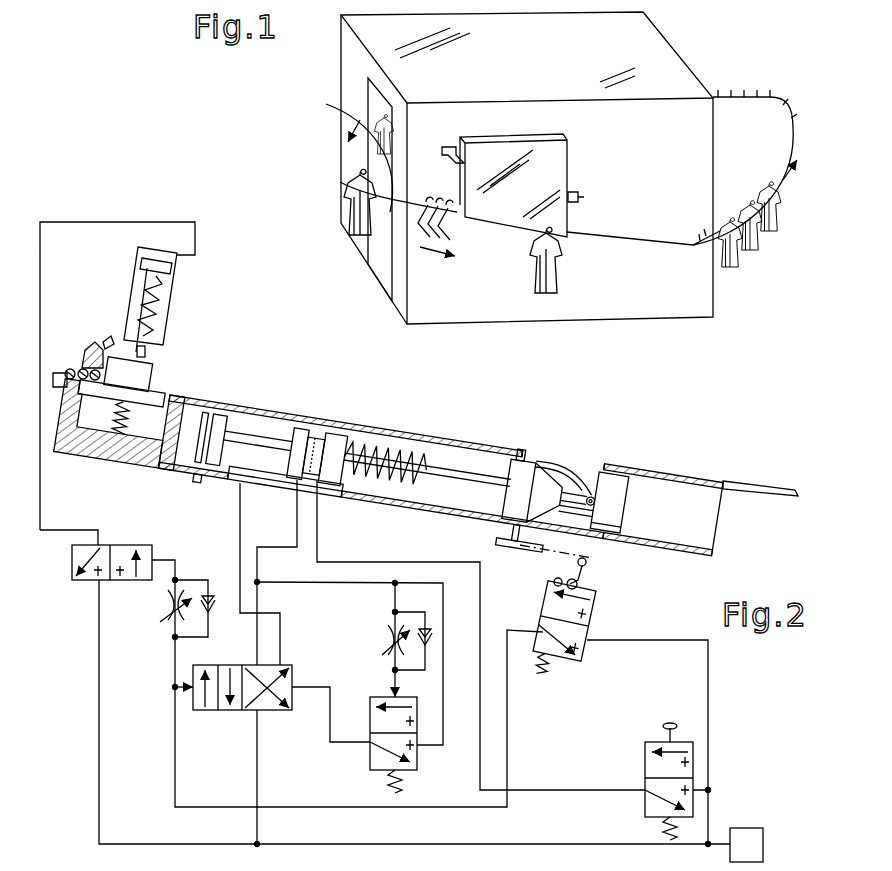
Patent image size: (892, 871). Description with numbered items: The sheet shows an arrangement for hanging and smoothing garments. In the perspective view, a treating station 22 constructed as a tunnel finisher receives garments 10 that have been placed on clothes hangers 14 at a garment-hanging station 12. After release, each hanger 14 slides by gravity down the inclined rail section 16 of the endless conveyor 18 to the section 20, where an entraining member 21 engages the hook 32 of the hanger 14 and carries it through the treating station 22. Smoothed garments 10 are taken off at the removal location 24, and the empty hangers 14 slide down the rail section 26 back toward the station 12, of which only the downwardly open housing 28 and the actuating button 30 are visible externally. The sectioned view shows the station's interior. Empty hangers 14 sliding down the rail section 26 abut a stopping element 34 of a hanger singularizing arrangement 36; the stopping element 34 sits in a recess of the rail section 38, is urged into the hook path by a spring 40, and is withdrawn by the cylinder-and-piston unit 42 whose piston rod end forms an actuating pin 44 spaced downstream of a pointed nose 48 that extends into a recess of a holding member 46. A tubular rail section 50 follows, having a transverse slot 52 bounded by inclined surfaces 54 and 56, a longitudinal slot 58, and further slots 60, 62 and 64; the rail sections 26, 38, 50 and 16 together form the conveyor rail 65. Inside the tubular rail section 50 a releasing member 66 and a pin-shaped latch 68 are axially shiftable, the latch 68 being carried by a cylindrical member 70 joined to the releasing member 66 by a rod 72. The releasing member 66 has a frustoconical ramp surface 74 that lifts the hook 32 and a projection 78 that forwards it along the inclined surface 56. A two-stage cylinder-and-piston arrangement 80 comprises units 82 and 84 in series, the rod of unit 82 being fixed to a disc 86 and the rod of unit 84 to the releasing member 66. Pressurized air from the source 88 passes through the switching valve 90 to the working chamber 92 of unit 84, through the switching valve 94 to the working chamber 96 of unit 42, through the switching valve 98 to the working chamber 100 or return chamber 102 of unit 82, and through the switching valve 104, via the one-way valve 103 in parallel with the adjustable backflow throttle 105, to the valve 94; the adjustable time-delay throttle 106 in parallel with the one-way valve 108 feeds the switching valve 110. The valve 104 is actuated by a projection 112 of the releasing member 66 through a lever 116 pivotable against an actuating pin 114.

In FIG. 1, the garment 10 is at (560, 272).
In FIG. 1, the garment-hanging station 12 is at (580, 160).
In FIG. 1, the clothes hanger 14 is at (455, 215).
In FIG. 1, the rail section 16 is at (633, 237).
In FIG. 2, the rail section 16 is at (738, 485).
In FIG. 1, the endless conveyor 18 is at (757, 72).
In FIG. 1, the conveyor section 20 is at (790, 131).
In FIG. 1, the entraining member 21 is at (690, 243).
In FIG. 1, the treating station 22 is at (685, 68).
In FIG. 1, the removal location 24 is at (345, 189).
In FIG. 1, the rail section 26 is at (412, 200).
In FIG. 2, the rail section 26 is at (60, 375).
In FIG. 1, the housing 28 is at (505, 140).
In FIG. 1, the actuating button 30 is at (584, 196).
In FIG. 2, the actuating button 30 is at (668, 722).
In FIG. 1, the hook 32 is at (425, 207).
In FIG. 2, the hook 32 is at (70, 368).
In FIG. 2, the stopping element 34 is at (149, 377).
In FIG. 2, the hanger singularizing arrangement 36 is at (142, 374).
In FIG. 2, the rail section 38 is at (112, 445).
In FIG. 2, the spring 40 is at (109, 438).
In FIG. 2, the cylinder-and-piston unit 42 is at (178, 300).
In FIG. 2, the actuating pin 44 is at (162, 345).
In FIG. 2, the holding member 46 is at (106, 340).
In FIG. 2, the pointed nose 48 is at (95, 345).
In FIG. 2, the tubular rail section 50 is at (341, 454).
In FIG. 2, the transverse slot 52 is at (583, 467).
In FIG. 2, the inclined surface 54 is at (561, 464).
In FIG. 2, the inclined surface 56 is at (612, 495).
In FIG. 2, the longitudinally extending slot 58 is at (591, 444).
In FIG. 2, the longitudinal slot 60 is at (618, 556).
In FIG. 2, the longitudinally extending slot 62 is at (470, 532).
In FIG. 2, the longitudinally extending slot 64 is at (282, 499).
In FIG. 2, the conveyor rail 65 is at (445, 400).
In FIG. 2, the releasing member 66 is at (525, 492).
In FIG. 2, the latch 68 is at (600, 478).
In FIG. 2, the cylindrical member 70 is at (659, 500).
In FIG. 2, the rod 72 is at (570, 548).
In FIG. 2, the ramp surface 74 is at (568, 447).
In FIG. 2, the projection 78 is at (525, 428).
In FIG. 2, the cylinder-and-piston arrangement 80 is at (387, 452).
In FIG. 2, the cylinder-and-piston unit 82 is at (261, 422).
In FIG. 2, the cylinder-and-piston unit 84 is at (429, 457).
In FIG. 2, the disc 86 is at (193, 453).
In FIG. 2, the pressurized fluid source 88 is at (752, 828).
In FIG. 2, the switching valve 90 is at (645, 752).
In FIG. 2, the working chamber 92 is at (334, 447).
In FIG. 2, the switching valve 94 is at (88, 578).
In FIG. 2, the working chamber 96 is at (155, 252).
In FIG. 2, the switching valve 98 is at (212, 712).
In FIG. 2, the working chamber 100 is at (307, 439).
In FIG. 2, the return chamber 102 is at (209, 455).
In FIG. 2, the one-way valve 103 is at (206, 611).
In FIG. 2, the switching valve 104 is at (595, 620).
In FIG. 2, the adjustable backflow throttle 105 is at (165, 603).
In FIG. 2, the adjustable time-delay throttle 106 is at (382, 632).
In FIG. 2, the one-way valve 108 is at (422, 646).
In FIG. 2, the switching valve 110 is at (372, 755).
In FIG. 2, the projection 112 is at (518, 551).
In FIG. 2, the actuating pin 114 is at (580, 584).
In FIG. 2, the lever 116 is at (580, 566).